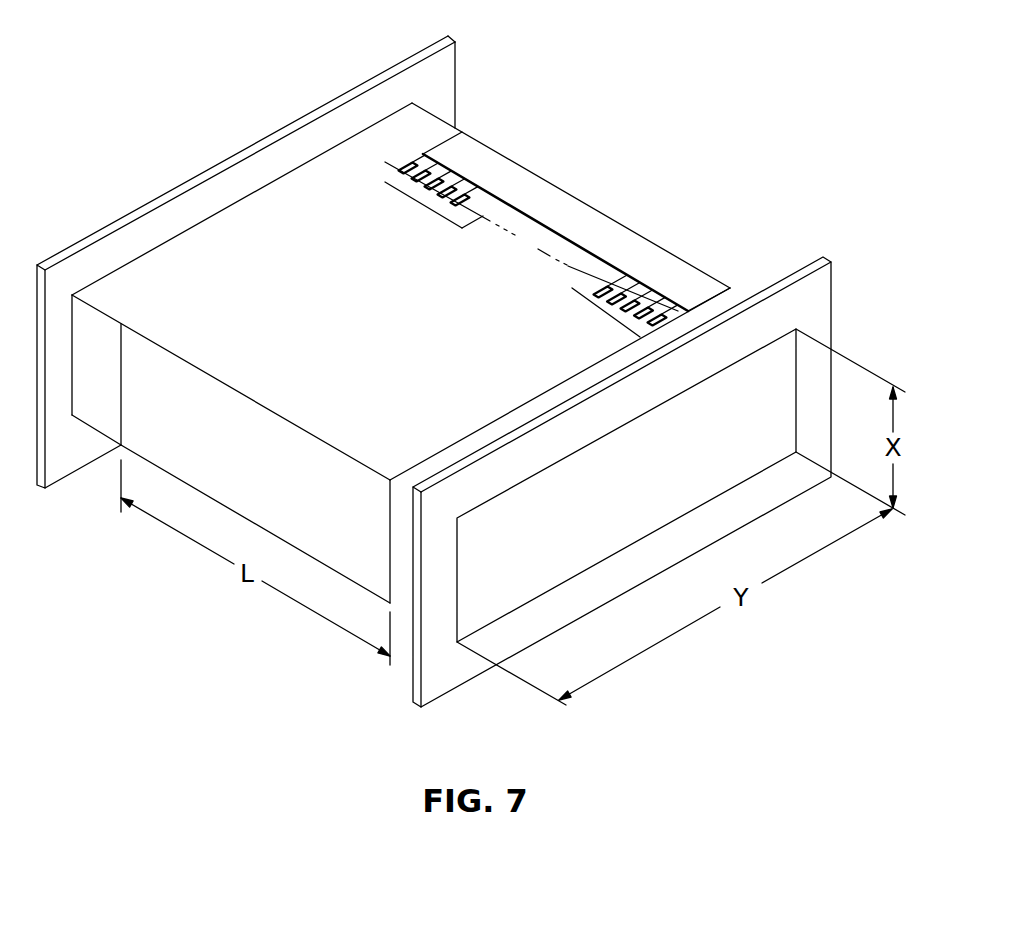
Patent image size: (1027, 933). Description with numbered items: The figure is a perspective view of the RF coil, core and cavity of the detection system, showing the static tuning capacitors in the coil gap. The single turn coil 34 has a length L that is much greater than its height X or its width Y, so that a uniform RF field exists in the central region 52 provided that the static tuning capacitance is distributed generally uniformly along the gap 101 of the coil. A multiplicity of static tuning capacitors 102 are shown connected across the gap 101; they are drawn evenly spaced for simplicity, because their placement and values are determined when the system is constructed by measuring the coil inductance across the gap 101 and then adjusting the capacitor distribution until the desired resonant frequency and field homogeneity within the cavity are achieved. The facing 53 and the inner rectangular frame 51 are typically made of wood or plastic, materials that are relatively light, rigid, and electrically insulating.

The single turn coil 34 is at (374, 328).
The inner rectangular frame 51 is at (360, 148).
The central region 52 is at (676, 483).
The facing 53 is at (822, 305).
The gap 101 is at (507, 217).
The static tuning capacitors 102 is at (452, 202).